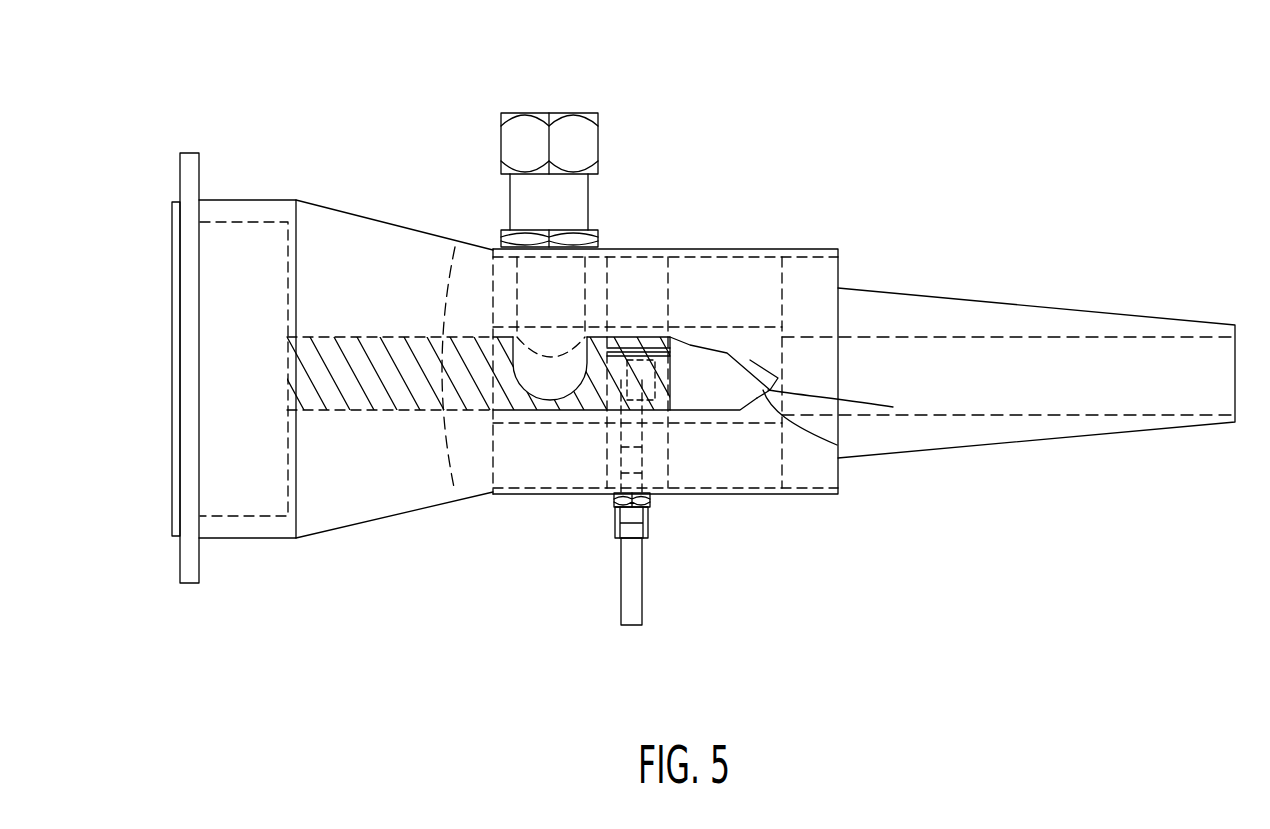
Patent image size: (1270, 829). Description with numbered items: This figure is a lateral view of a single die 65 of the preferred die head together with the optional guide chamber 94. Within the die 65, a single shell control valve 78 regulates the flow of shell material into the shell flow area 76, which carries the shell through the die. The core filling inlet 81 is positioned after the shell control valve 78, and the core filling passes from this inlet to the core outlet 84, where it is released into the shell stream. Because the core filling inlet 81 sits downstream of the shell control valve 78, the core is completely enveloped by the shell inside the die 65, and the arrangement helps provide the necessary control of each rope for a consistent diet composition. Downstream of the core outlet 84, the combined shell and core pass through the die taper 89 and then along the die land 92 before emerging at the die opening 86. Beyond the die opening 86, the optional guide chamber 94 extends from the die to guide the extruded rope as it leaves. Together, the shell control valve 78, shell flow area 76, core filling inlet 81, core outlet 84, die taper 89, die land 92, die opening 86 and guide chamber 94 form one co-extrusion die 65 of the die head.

The die 65 is at (347, 532).
The shell flow area 76 is at (367, 343).
The shell control valve 78 is at (522, 112).
The core filling inlet 81 is at (632, 625).
The core outlet 84 is at (710, 380).
The die opening 86 is at (780, 367).
The die taper 89 is at (837, 445).
The die land 92 is at (893, 407).
The guide chamber 94 is at (1172, 428).